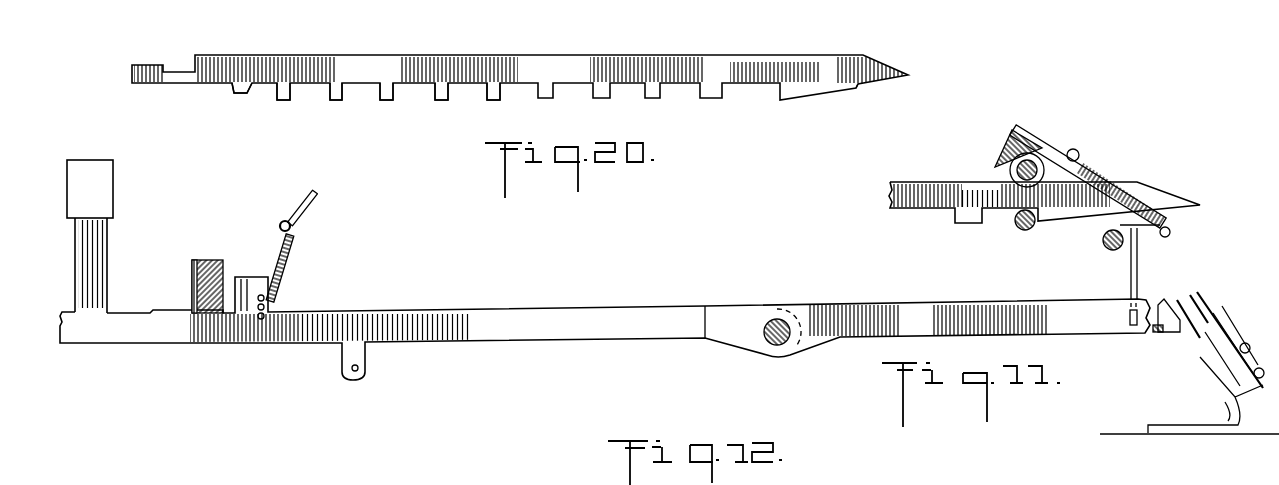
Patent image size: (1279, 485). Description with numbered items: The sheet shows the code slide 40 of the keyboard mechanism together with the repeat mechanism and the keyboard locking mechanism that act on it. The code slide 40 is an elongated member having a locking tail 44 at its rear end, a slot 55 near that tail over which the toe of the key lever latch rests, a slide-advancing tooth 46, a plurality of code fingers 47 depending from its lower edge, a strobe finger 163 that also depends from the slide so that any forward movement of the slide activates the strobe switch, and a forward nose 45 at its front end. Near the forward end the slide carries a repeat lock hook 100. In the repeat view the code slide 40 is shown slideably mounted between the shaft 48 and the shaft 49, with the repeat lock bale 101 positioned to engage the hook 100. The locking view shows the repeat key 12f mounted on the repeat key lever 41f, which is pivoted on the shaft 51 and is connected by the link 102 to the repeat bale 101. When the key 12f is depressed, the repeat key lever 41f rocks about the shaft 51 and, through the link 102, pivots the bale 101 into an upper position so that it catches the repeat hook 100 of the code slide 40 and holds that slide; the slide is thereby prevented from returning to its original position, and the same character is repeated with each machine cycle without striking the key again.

In FIG. 20, the code slide 40 is at (668, 73).
In FIG. 11, the code slide 40 is at (925, 190).
In FIG. 20, the locking tail 44 is at (138, 63).
In FIG. 20, the slot 55 is at (181, 78).
In FIG. 20, the slide-advancing tooth 46 is at (242, 94).
In FIG. 20, the strobe finger 163 is at (283, 102).
In FIG. 20, the code fingers 47 is at (387, 101).
In FIG. 20, the forward nose 45 is at (890, 62).
In FIG. 20, the repeat lock hook 100 is at (866, 91).
In FIG. 11, the repeat lock hook 100 is at (1108, 223).
In FIG. 12, the repeat key 12f is at (113, 196).
In FIG. 12, the repeat key lever 41f is at (542, 328).
In FIG. 12, the shaft 51 is at (782, 322).
In FIG. 11, the shaft 48 is at (1019, 229).
In FIG. 11, the shaft 49 is at (1035, 164).
In FIG. 11, the repeat lock bale 101 is at (1170, 232).
In FIG. 11, the link 102 is at (1140, 273).